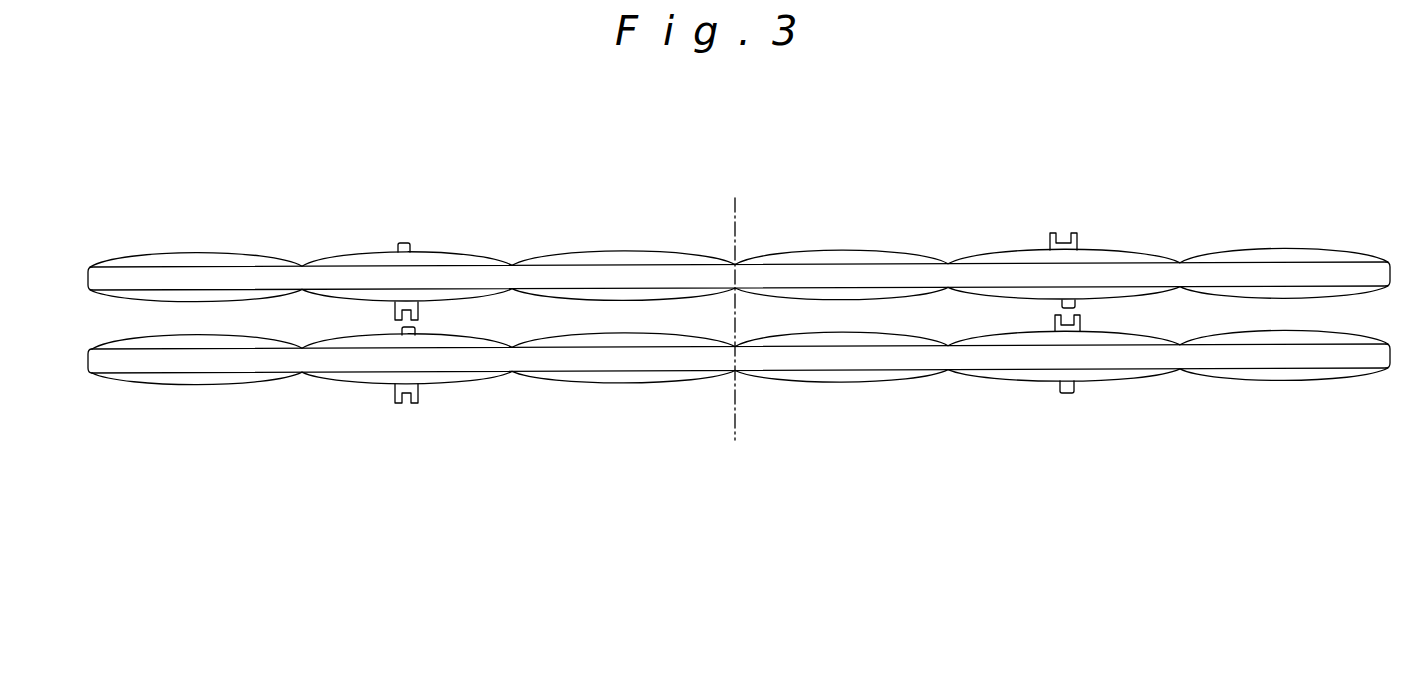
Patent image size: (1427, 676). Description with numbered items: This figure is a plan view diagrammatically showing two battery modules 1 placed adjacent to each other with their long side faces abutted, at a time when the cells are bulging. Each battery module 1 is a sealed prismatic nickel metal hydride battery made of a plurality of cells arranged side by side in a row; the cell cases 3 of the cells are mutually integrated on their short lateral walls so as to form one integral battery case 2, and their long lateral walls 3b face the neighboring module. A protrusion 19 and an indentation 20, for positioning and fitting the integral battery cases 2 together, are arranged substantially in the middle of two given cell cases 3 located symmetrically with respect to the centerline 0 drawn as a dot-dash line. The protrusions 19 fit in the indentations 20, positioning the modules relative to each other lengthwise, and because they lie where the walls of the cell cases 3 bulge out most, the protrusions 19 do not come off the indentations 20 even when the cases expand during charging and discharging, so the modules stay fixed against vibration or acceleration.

The centerline 0 is at (735, 240).
The battery module 1 is at (91, 252).
The integral battery case 2 is at (147, 259).
The cell case 3 is at (218, 253).
The long lateral wall 3b is at (553, 252).
The protrusion 19 is at (405, 243).
The indentation 20 is at (425, 306).